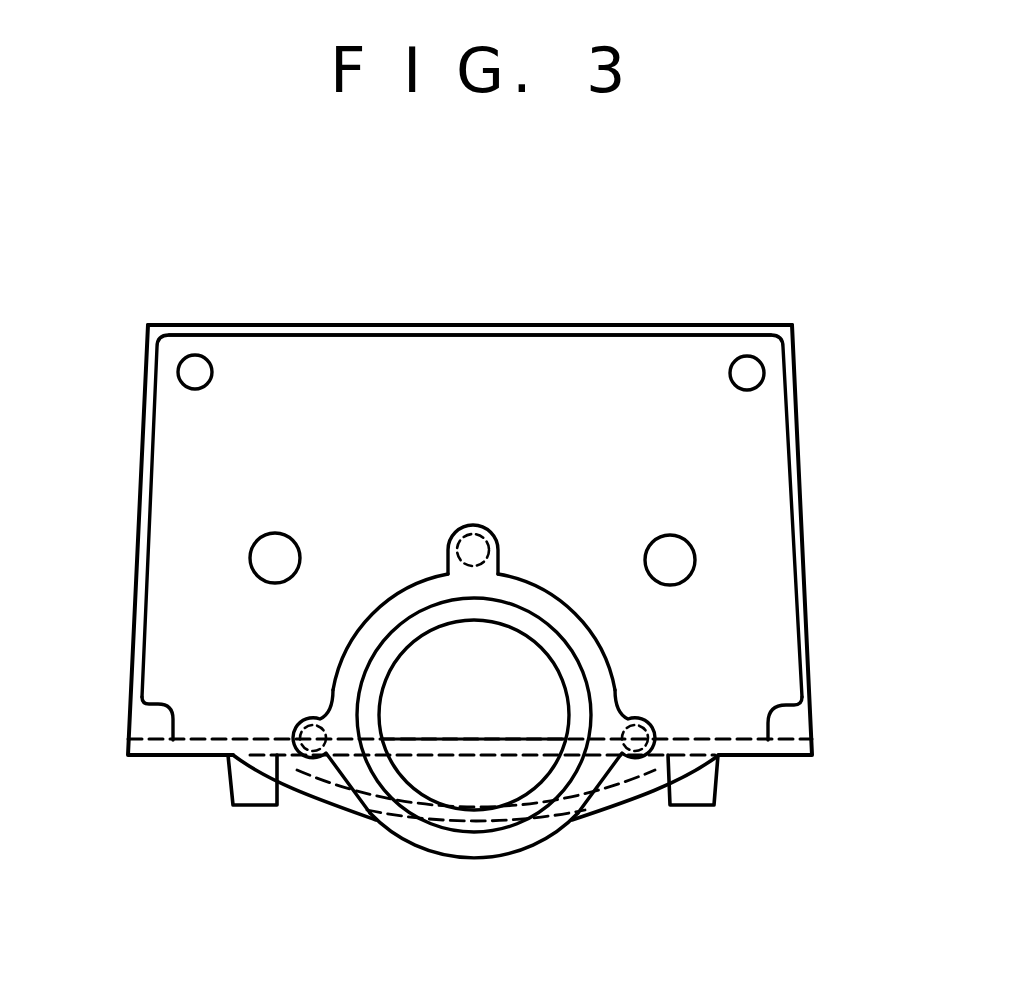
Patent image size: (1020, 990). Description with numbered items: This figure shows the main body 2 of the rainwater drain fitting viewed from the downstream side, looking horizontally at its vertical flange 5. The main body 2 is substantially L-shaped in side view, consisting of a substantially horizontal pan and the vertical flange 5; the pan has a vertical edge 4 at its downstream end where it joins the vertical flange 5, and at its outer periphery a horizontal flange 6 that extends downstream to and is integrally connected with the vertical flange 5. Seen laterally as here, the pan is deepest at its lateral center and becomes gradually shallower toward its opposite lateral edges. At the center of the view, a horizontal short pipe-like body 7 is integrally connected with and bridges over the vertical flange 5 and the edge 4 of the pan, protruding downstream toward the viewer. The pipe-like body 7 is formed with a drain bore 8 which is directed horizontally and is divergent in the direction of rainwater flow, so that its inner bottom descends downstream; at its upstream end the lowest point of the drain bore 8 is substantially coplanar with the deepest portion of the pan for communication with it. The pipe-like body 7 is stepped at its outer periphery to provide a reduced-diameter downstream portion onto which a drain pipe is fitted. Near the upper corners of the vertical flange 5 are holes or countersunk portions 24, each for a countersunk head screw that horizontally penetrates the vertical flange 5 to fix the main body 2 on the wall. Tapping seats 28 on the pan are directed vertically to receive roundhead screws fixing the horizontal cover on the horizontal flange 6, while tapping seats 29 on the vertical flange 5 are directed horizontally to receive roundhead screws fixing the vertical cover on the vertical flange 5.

The main body 2 is at (755, 792).
The vertical edge 4 is at (327, 770).
The vertical flange 5 is at (470, 386).
The horizontal flange 6 is at (435, 738).
The pipe-like body 7 is at (403, 817).
The drain bore 8 is at (540, 697).
The holes or countersunk portions 24 is at (193, 372).
The tapping seats 28 is at (231, 793).
The tapping seats 29 is at (250, 557).